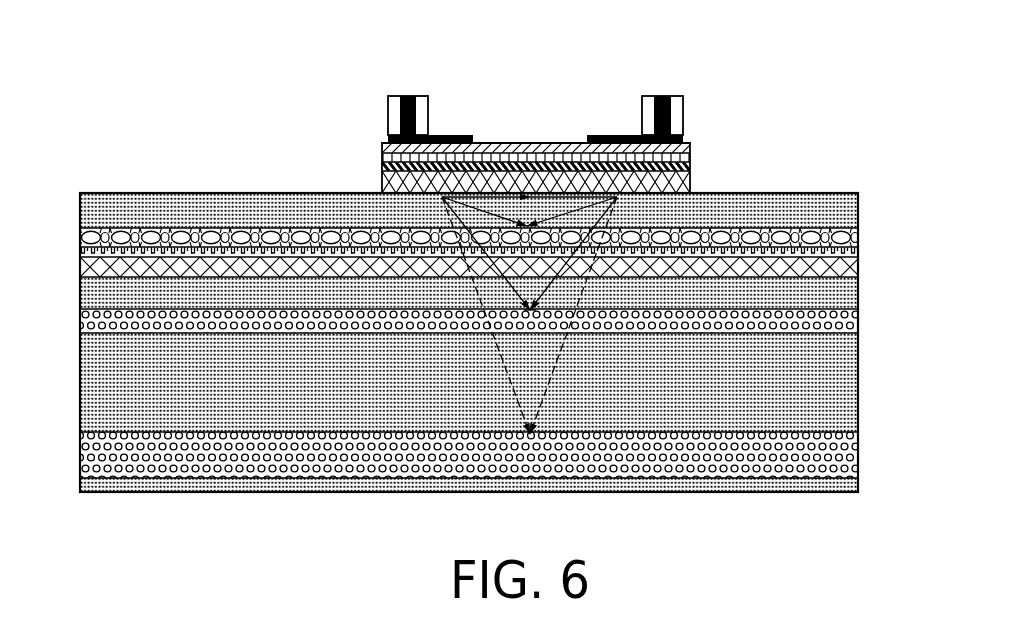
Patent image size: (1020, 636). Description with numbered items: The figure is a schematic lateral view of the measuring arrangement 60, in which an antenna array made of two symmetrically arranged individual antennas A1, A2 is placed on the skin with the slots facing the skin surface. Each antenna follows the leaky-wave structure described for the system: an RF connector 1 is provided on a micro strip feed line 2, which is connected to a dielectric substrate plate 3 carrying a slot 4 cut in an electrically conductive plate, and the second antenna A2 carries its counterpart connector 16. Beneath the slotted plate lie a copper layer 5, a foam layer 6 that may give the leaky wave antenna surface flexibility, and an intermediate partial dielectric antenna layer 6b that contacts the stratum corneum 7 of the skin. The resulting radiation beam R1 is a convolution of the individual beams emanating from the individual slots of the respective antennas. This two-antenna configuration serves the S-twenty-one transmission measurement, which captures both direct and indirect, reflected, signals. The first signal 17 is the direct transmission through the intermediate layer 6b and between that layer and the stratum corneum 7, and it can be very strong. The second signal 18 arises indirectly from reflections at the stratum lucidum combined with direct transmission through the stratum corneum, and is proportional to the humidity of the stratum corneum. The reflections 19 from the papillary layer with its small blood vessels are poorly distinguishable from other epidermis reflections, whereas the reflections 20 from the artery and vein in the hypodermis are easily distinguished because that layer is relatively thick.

The ultrasonic sensor device 60 is at (333, 100).
The individual antenna A1 is at (398, 93).
The RF connector 1 is at (434, 92).
The micro strip feed line 2 is at (457, 131).
The dielectric substrate plate 3 is at (529, 142).
The slot 4 is at (477, 143).
The copper layer 5 is at (692, 148).
The foam layer 6 is at (692, 167).
The intermediate dielectric antenna layer 6b is at (692, 190).
The stratum corneum 7 is at (772, 189).
The second piezoelectric element 16 is at (689, 92).
The individual antenna A2 is at (655, 93).
The first signal 17 is at (492, 200).
The second signal 18 is at (586, 213).
The reflections of the papillary layer 19 is at (544, 304).
The resulting radiation beam R1 is at (477, 292).
The reflections of the artery and vein 20 is at (553, 413).